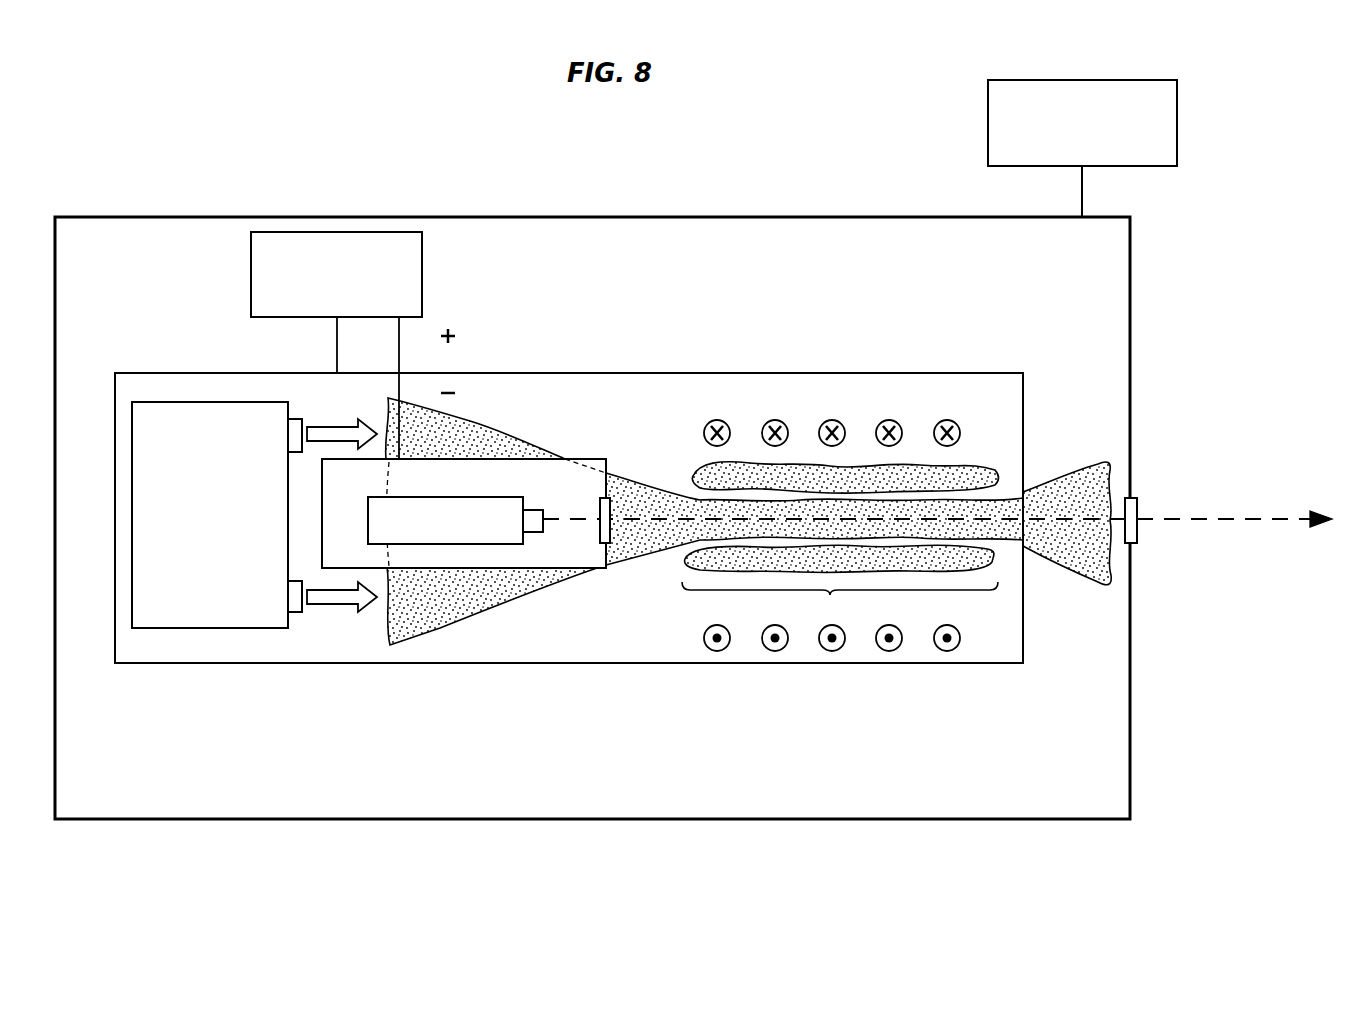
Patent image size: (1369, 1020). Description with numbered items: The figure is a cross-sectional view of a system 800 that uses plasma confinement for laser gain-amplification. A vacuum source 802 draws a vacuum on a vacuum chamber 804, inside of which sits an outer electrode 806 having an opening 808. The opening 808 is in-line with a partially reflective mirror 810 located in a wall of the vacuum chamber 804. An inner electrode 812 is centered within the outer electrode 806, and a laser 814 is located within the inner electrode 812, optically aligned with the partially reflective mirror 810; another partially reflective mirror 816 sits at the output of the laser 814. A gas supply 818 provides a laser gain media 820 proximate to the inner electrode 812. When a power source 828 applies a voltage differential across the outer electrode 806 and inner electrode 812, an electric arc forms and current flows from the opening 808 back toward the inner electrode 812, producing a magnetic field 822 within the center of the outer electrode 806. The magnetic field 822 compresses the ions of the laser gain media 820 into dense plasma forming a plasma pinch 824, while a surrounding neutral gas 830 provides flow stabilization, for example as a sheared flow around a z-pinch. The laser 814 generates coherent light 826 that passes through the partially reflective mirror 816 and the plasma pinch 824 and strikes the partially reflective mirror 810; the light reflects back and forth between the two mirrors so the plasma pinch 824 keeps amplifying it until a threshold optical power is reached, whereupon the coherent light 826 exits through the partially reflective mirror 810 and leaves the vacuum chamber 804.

The system 800 is at (306, 146).
The vacuum source 802 is at (1082, 148).
The vacuum chamber 804 is at (592, 518).
The outer electrode 806 is at (737, 372).
The opening 808 is at (1025, 491).
The partially reflective mirror 810 is at (1139, 508).
The inner electrode 812 is at (581, 459).
The laser 814 is at (455, 520).
The partially reflective mirror 816 is at (610, 506).
The gas supply 818 is at (254, 515).
The laser gain media 820 is at (490, 587).
The magnetic field 822 is at (775, 420).
The plasma pinch 824 is at (840, 616).
The coherent light 826 is at (1262, 519).
The power source 828 is at (353, 345).
The neutral gas 830 is at (965, 461).